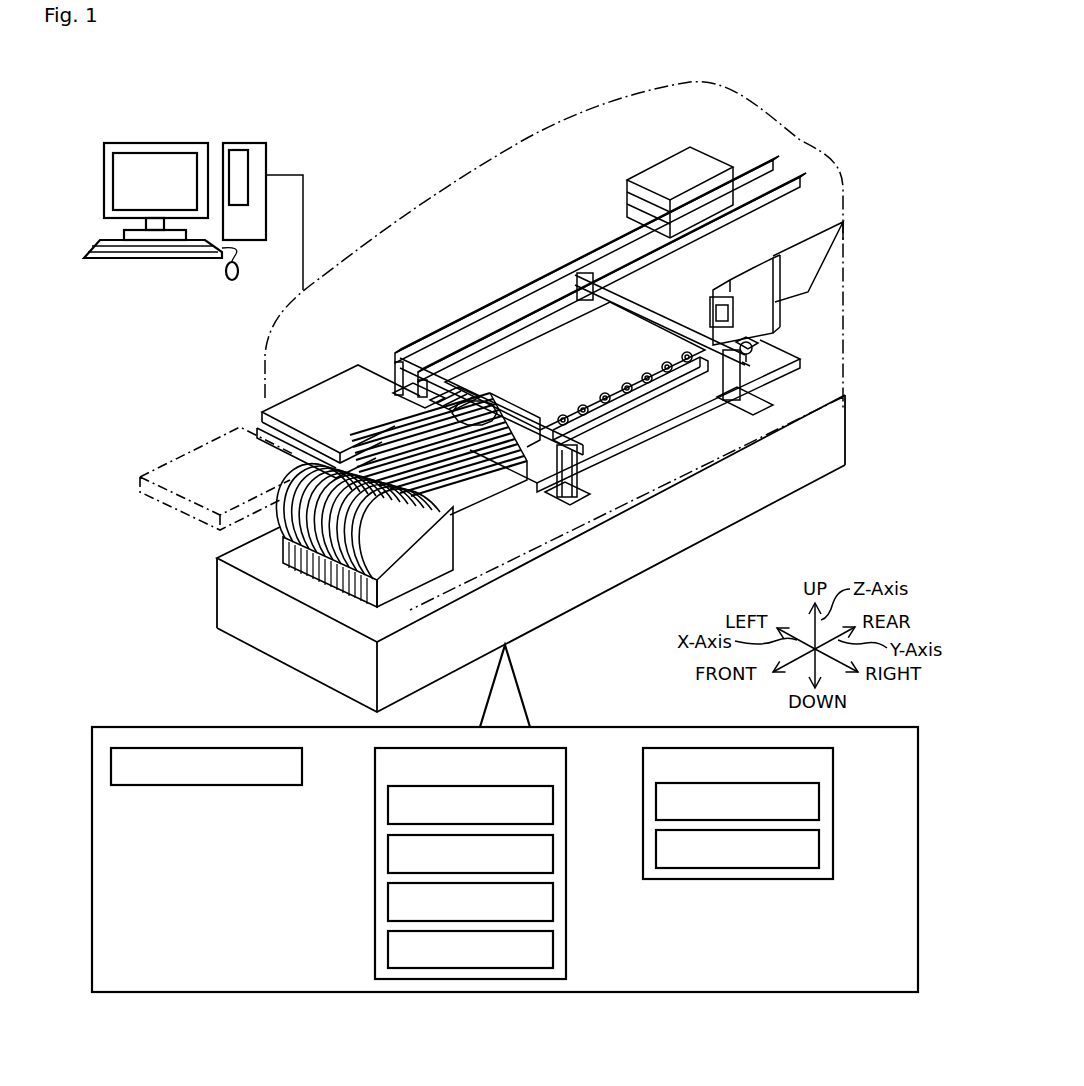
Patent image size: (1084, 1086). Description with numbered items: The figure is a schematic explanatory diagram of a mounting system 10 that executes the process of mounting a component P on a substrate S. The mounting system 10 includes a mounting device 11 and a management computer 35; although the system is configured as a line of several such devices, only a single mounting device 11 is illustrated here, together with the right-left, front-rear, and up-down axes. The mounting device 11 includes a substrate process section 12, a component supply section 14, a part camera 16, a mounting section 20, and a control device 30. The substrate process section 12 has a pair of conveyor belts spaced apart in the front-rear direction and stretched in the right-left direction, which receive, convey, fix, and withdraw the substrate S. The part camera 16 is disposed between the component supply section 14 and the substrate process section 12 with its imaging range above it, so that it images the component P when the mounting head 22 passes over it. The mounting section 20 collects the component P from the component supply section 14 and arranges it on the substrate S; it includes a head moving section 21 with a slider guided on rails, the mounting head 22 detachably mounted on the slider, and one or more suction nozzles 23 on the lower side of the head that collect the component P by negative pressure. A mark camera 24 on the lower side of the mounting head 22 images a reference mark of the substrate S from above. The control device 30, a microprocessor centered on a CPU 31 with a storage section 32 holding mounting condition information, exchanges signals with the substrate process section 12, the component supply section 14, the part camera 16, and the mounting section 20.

The mounting system 10 is at (870, 87).
The mounting device 11 is at (782, 109).
The substrate process section 12 is at (670, 408).
The component supply section 14 is at (248, 403).
The part camera 16 is at (477, 405).
The mounting section 20 is at (826, 200).
The head moving section 21 is at (790, 148).
The mounting head 22 is at (768, 307).
The suction nozzle 23 is at (755, 352).
The mark camera 24 is at (772, 327).
The control device 30 is at (833, 756).
The CPU 31 is at (819, 803).
The storage section 32 is at (819, 851).
The management computer 35 is at (212, 102).
The substrate S is at (607, 320).
The component P is at (760, 360).